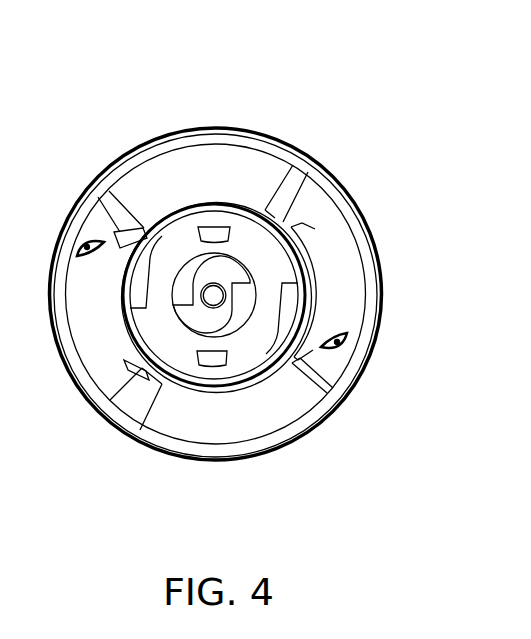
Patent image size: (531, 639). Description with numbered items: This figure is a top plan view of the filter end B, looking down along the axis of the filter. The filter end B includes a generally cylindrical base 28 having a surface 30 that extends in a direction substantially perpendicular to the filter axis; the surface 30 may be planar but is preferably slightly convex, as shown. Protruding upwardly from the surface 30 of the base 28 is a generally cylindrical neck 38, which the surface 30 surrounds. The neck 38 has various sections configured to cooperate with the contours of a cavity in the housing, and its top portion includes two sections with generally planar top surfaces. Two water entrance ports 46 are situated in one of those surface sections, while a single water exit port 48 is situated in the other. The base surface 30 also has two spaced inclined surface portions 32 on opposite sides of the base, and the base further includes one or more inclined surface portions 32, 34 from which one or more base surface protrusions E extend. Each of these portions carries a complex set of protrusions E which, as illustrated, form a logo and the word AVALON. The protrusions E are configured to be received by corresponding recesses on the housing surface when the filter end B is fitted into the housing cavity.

The base 28 is at (250, 137).
The surface 30 is at (163, 181).
The inclined surface portions 32 is at (105, 387).
The inclined surface portion 34 is at (327, 217).
The neck 38 is at (289, 225).
The water entrance ports 46 is at (215, 227).
The water exit port 48 is at (218, 298).
The filter end B is at (287, 228).
The complex set of protrusions E is at (70, 306).